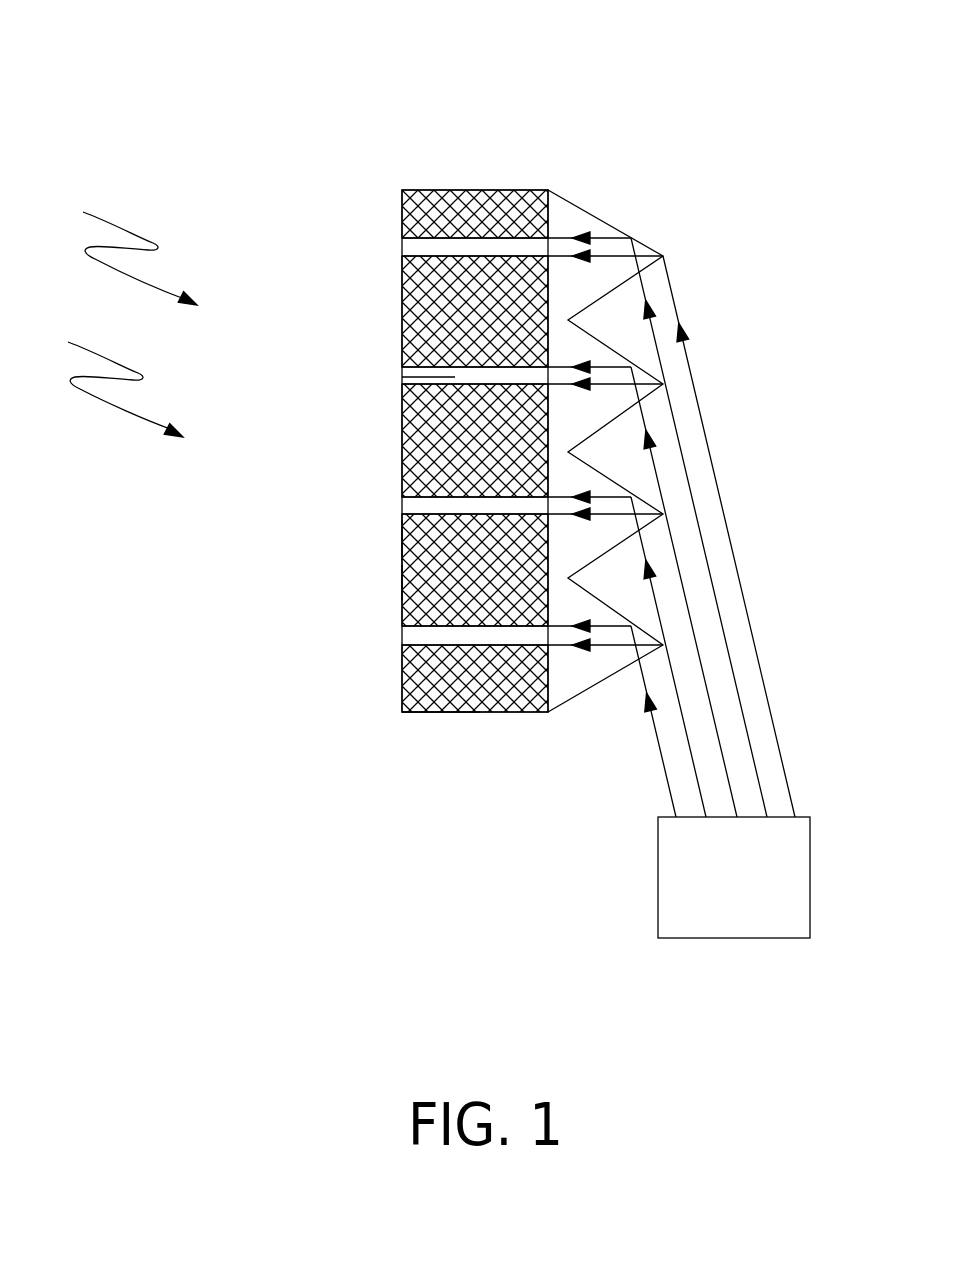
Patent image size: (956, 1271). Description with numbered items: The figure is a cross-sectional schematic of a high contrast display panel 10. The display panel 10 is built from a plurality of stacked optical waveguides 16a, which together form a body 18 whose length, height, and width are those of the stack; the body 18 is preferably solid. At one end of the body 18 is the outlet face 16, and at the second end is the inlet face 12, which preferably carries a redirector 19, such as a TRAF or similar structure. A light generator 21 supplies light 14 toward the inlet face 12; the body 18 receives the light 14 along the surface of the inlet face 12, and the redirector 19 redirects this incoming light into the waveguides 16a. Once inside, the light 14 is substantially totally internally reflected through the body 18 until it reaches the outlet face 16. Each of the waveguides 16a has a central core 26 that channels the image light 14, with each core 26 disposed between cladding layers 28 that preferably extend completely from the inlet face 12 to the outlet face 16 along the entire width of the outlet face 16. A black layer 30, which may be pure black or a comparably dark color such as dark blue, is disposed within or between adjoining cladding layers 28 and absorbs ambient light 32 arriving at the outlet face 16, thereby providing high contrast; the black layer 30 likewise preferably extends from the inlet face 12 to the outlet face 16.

The display panel 10 is at (793, 26).
The inlet face 12 is at (600, 222).
The light 14 is at (660, 352).
The outlet face 16 is at (402, 268).
The optical waveguides 16a is at (400, 221).
The body 18 is at (503, 190).
The redirector 19 is at (603, 220).
The light generator 21 is at (757, 898).
The central core 26 is at (402, 380).
The cladding layers 28 is at (400, 580).
The black layer 30 is at (402, 538).
The ambient light 32 is at (115, 320).